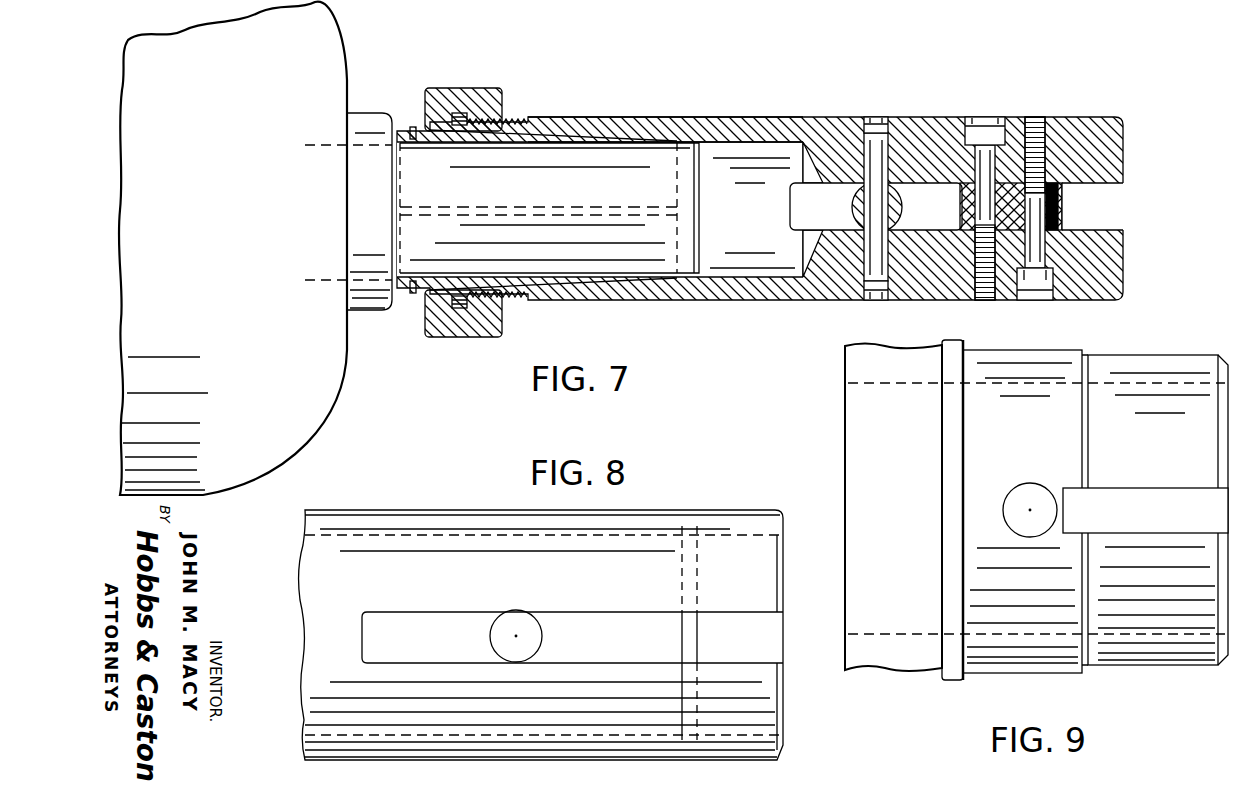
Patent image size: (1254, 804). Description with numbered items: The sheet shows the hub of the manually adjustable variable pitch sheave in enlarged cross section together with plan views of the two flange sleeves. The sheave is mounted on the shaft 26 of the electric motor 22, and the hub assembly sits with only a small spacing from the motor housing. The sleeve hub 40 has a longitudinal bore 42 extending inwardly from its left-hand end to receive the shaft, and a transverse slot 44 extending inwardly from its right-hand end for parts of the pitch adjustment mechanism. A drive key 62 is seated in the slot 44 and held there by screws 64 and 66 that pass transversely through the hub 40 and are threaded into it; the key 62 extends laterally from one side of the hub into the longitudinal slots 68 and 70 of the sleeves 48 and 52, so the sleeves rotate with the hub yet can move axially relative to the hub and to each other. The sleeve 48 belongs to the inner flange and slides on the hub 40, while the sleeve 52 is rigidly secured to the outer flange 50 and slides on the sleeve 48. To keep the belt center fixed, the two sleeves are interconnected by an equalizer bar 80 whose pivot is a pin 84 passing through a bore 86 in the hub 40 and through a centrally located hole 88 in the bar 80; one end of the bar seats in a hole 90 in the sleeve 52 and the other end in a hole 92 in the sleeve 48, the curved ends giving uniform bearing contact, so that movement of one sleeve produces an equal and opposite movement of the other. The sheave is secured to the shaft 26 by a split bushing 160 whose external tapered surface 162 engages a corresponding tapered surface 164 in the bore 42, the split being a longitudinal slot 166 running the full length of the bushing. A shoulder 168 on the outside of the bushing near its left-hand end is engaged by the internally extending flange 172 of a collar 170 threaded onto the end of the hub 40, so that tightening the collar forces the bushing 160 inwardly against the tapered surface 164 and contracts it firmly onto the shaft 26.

In FIG. 7, the electric motor 22 is at (261, 213).
In FIG. 7, the shaft 26 is at (572, 160).
In FIG. 7, the sleeve hub 40 is at (763, 301).
In FIG. 7, the longitudinal bore 42 is at (738, 155).
In FIG. 7, the transverse slot 44 is at (1115, 196).
In FIG. 7, the drive key 62 is at (1063, 226).
In FIG. 7, the screw 64 is at (1003, 96).
In FIG. 7, the screw 66 is at (1033, 130).
In FIG. 7, the equalizer bar 80 is at (901, 219).
In FIG. 7, the pin 84 is at (882, 133).
In FIG. 7, the bore 86 is at (872, 118).
In FIG. 7, the hole 88 is at (862, 211).
In FIG. 7, the split bushing 160 is at (530, 130).
In FIG. 7, the external tapered surface 162 is at (628, 130).
In FIG. 7, the tapered surface 164 is at (600, 281).
In FIG. 7, the longitudinal slot 166 is at (613, 212).
In FIG. 7, the shoulder 168 is at (455, 292).
In FIG. 7, the collar 170 is at (474, 92).
In FIG. 7, the internally extending flange 172 is at (430, 305).
In FIG. 8, the sleeve 48 is at (710, 517).
In FIG. 8, the longitudinal slot 68 is at (645, 623).
In FIG. 8, the hole 92 is at (515, 625).
In FIG. 9, the outer flange 50 is at (950, 520).
In FIG. 9, the sleeve 52 is at (1160, 375).
In FIG. 9, the longitudinal slot 70 is at (1160, 502).
In FIG. 9, the hole 90 is at (1025, 498).